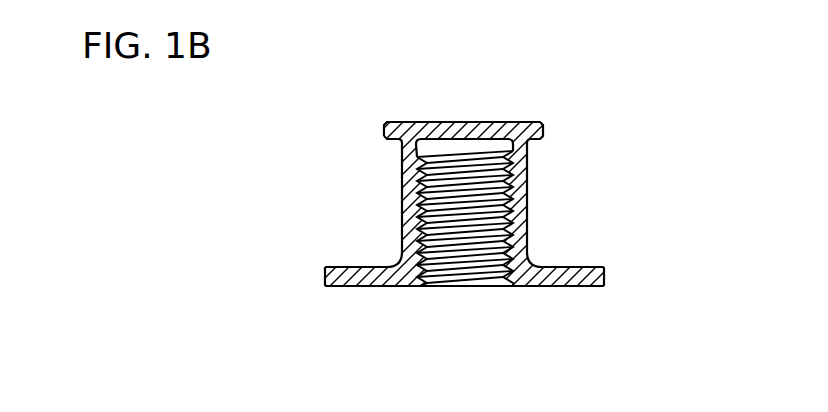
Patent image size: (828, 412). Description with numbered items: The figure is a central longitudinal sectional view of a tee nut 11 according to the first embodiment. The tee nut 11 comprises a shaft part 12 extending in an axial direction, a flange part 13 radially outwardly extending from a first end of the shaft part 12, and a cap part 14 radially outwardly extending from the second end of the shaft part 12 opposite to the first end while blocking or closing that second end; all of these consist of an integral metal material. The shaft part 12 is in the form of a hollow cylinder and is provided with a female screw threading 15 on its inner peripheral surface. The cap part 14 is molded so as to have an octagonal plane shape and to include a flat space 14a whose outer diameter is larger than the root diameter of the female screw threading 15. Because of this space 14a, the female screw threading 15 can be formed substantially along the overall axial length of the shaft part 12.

The tee nut 11 is at (464, 160).
The shaft part 12 is at (523, 188).
The flange part 13 is at (587, 270).
The cap part 14 is at (490, 125).
The flat space 14a is at (453, 143).
The female screw threading 15 is at (417, 201).